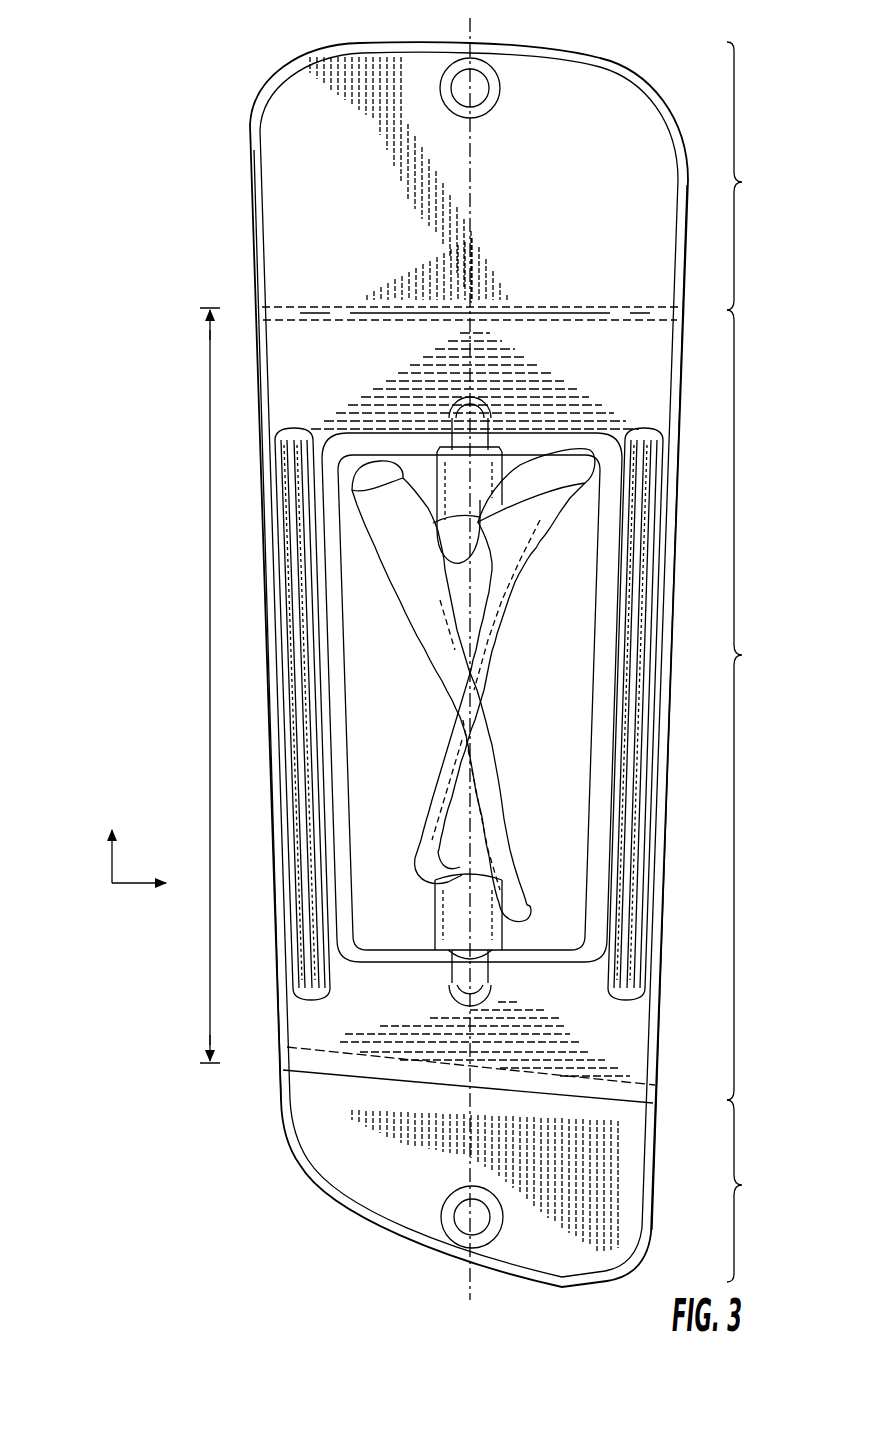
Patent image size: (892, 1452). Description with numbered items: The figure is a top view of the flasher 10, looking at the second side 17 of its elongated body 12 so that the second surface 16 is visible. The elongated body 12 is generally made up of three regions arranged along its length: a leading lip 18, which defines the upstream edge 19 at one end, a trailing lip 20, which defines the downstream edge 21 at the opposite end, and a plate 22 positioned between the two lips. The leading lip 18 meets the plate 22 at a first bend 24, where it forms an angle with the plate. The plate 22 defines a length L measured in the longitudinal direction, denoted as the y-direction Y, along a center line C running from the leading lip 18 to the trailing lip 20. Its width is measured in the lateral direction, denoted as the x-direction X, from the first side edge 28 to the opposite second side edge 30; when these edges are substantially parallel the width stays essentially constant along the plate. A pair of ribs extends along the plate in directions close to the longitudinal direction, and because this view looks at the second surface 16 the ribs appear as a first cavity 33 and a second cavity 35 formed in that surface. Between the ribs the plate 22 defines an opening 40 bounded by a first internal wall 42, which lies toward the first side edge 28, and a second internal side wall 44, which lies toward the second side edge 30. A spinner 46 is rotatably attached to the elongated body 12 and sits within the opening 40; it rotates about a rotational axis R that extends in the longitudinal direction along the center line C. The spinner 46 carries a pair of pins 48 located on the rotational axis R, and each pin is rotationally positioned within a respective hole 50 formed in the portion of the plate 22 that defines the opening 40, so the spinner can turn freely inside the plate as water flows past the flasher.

The flasher 10 is at (183, 120).
The elongated body 12 is at (612, 1027).
The second surface 16 is at (306, 378).
The second side 17 is at (650, 352).
The leading lip 18 is at (538, 176).
The upstream edge 19 is at (525, 46).
The trailing lip 20 is at (559, 1191).
The downstream edge 21 is at (436, 1258).
The plate 22 is at (747, 705).
The first bend 24 is at (634, 310).
The first side edge 28 is at (266, 708).
The second side edge 30 is at (669, 778).
The first cavity 33 is at (300, 528).
The second cavity 35 is at (648, 517).
The opening 40 is at (470, 685).
The first internal wall 42 is at (346, 624).
The second internal side wall 44 is at (592, 600).
The spinner 46 is at (432, 796).
The pins 48 is at (481, 428).
The hole 50 is at (446, 406).
The center line C is at (476, 180).
The rotational axis R is at (470, 565).
The length L is at (210, 685).
The x-direction X is at (150, 881).
The y-direction Y is at (111, 836).